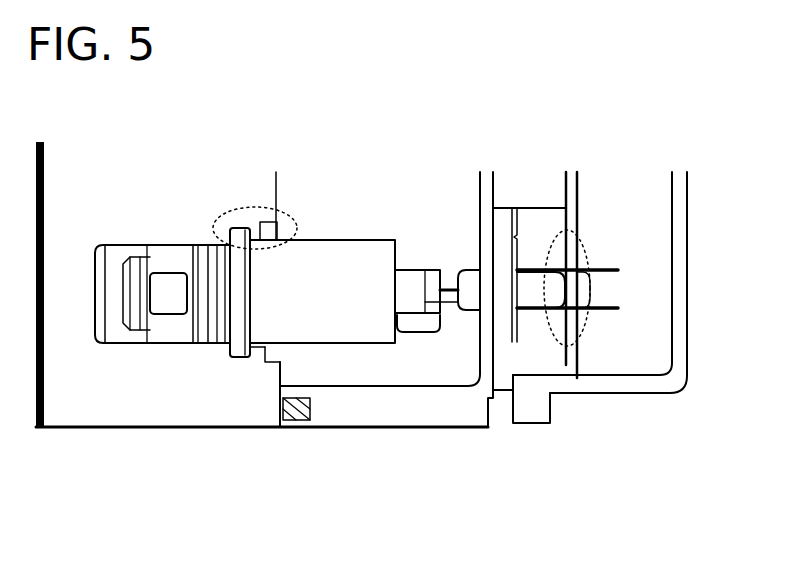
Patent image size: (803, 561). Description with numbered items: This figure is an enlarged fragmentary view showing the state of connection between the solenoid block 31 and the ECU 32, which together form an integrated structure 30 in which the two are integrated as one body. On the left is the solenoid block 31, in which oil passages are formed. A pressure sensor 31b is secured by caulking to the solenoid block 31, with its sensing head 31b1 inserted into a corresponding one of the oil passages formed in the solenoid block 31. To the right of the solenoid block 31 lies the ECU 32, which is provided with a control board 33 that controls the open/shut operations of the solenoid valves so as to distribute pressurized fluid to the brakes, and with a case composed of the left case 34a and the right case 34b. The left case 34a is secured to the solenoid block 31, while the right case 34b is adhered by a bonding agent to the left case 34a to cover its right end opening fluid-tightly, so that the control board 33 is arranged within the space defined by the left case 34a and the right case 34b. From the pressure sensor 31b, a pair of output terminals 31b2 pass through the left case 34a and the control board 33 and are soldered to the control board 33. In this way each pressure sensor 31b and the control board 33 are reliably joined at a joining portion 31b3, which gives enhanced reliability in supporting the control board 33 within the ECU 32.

The integrated structure 30 is at (320, 465).
The solenoid block 31 is at (172, 427).
The pressure sensor 31b is at (305, 240).
The sensing head 31b1 is at (165, 258).
The output terminals 31b2 is at (618, 270).
The joining portion 31b3 is at (583, 245).
The ECU 32 is at (453, 445).
The control board 33 is at (565, 185).
The left case 34a is at (388, 425).
The right case 34b is at (680, 256).